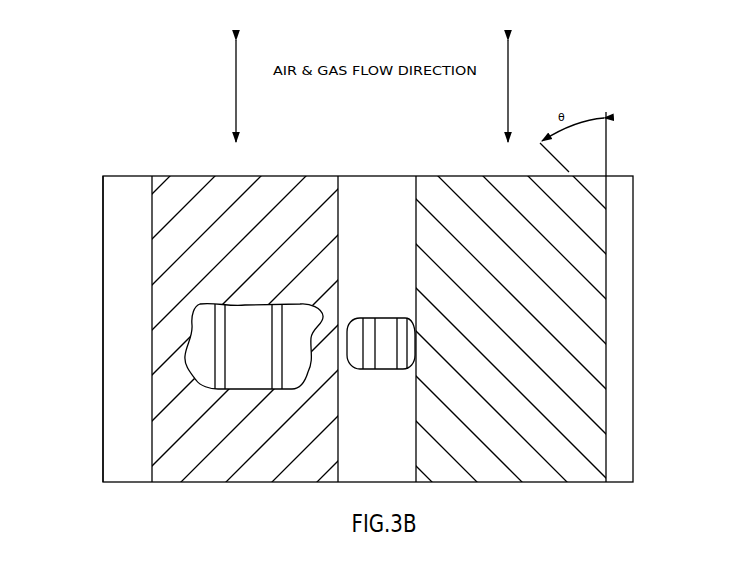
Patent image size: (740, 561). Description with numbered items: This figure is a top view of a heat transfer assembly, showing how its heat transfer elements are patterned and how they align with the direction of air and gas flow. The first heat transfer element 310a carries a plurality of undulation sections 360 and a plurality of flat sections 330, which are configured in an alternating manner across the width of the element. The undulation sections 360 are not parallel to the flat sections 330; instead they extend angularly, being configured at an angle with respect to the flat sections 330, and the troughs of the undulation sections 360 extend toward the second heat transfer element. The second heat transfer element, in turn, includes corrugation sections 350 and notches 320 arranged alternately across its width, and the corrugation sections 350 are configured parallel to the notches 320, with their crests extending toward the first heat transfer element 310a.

The first heat transfer element 310a is at (618, 172).
The notch 320 is at (405, 342).
The flat section 330 is at (130, 343).
The corrugation section 350 is at (213, 365).
The undulation section 360 is at (183, 248).